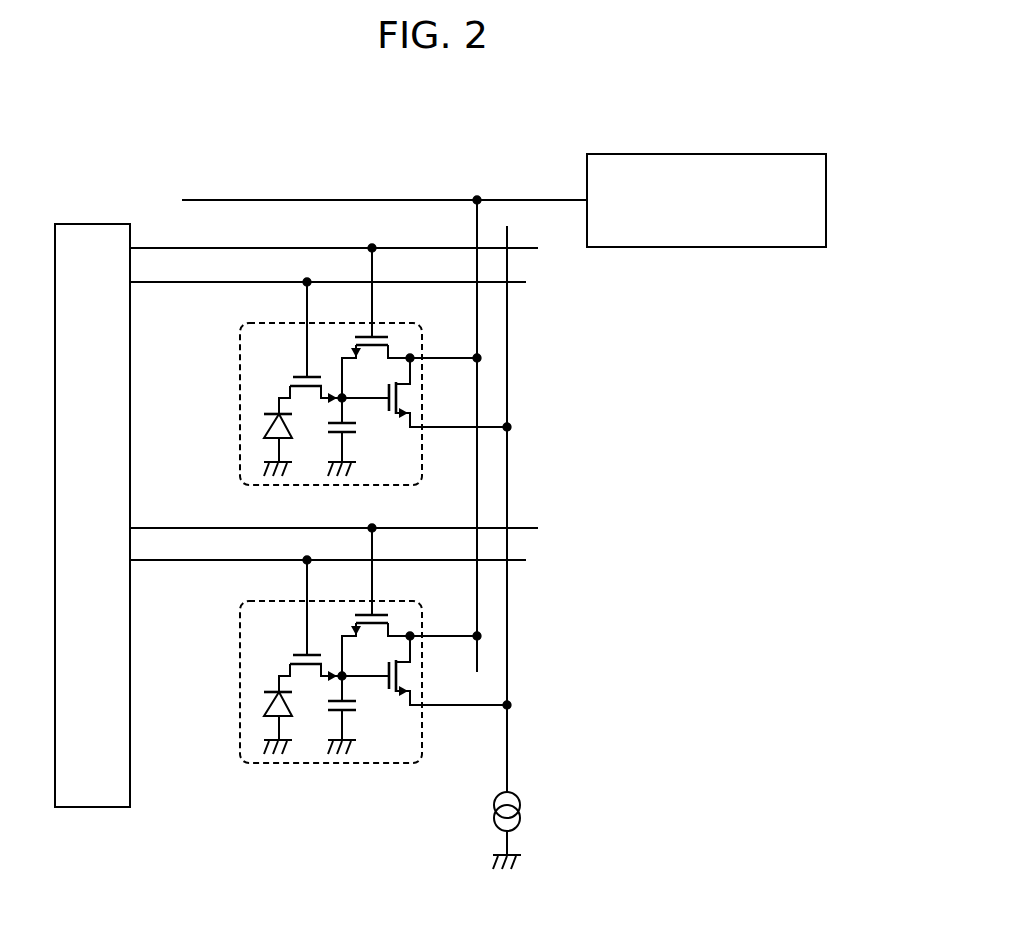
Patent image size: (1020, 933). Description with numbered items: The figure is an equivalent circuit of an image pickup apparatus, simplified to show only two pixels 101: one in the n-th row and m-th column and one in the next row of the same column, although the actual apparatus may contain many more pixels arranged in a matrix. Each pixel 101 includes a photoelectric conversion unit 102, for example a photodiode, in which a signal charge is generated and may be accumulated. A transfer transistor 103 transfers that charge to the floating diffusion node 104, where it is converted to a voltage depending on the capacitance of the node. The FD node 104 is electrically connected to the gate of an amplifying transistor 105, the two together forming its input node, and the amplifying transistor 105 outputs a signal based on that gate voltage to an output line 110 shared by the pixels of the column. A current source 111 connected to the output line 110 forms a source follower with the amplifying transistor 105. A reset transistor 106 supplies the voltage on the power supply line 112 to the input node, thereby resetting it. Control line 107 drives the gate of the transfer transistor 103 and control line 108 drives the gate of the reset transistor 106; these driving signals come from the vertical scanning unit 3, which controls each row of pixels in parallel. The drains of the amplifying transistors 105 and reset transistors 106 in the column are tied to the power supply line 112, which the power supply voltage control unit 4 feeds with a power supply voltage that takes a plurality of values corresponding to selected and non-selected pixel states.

The vertical scanning unit 3 is at (93, 807).
The power supply voltage control unit 4 is at (724, 247).
The pixel 101 is at (345, 485).
The photoelectric conversion unit 102 is at (267, 425).
The transfer transistor 103 is at (289, 388).
The floating diffusion (FD) node 104 is at (358, 430).
The amplifying transistor 105 is at (410, 398).
The reset transistor 106 is at (354, 349).
The control line 107 is at (328, 408).
The control line 108 is at (334, 376).
The output line 110 is at (508, 718).
The current source 111 is at (520, 822).
The power supply line 112 is at (461, 200).